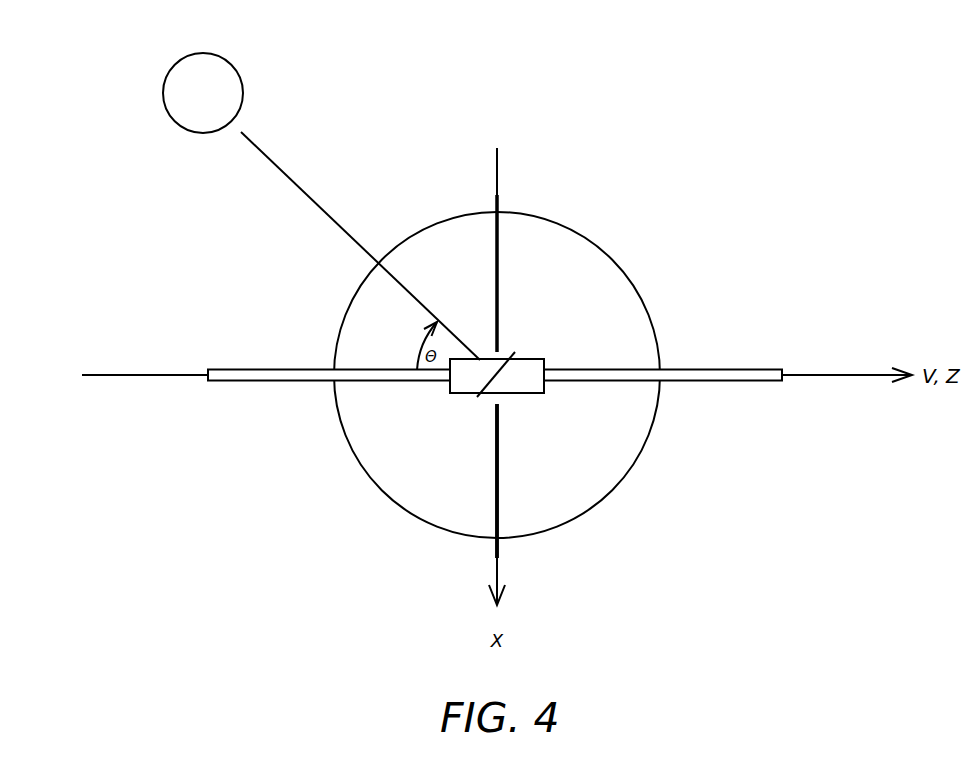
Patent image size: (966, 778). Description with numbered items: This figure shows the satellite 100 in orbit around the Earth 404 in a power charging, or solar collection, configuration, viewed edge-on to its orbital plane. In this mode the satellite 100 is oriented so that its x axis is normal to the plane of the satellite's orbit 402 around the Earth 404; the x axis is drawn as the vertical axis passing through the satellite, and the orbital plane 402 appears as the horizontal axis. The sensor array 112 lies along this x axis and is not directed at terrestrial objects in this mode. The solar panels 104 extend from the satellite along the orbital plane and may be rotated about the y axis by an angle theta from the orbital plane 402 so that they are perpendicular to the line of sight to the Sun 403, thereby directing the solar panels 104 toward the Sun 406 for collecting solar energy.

The satellite 100 is at (516, 188).
The solar panels 104 is at (503, 363).
The sensor array 112 is at (488, 512).
The satellite orbit 402 is at (722, 370).
The line of sight to the Sun 403 is at (300, 185).
The Earth 404 is at (584, 237).
The Sun 406 is at (228, 60).